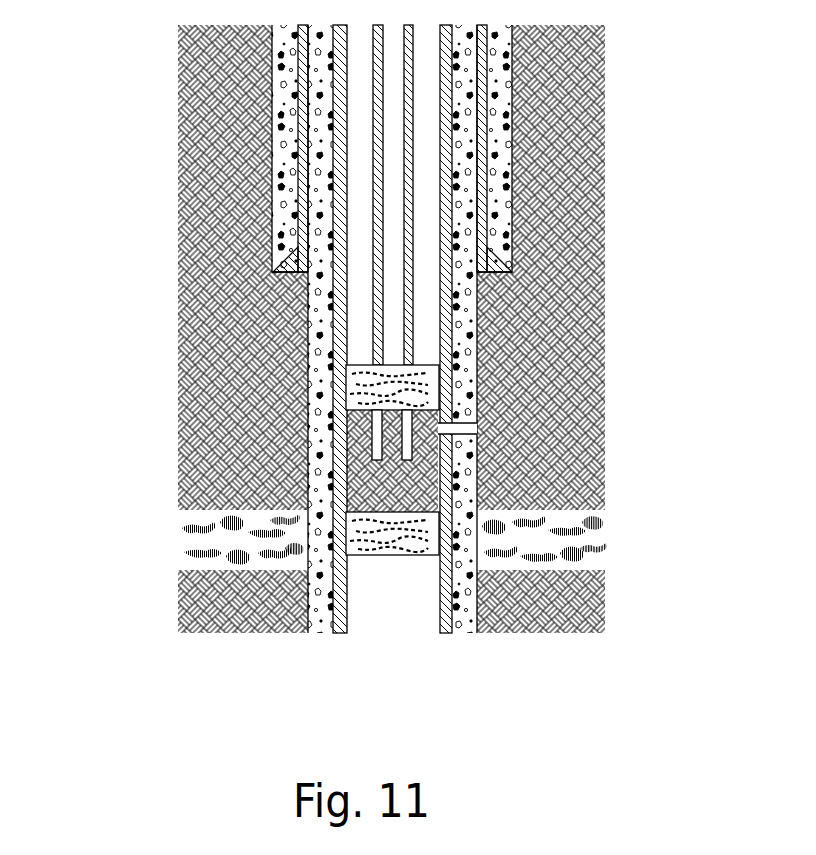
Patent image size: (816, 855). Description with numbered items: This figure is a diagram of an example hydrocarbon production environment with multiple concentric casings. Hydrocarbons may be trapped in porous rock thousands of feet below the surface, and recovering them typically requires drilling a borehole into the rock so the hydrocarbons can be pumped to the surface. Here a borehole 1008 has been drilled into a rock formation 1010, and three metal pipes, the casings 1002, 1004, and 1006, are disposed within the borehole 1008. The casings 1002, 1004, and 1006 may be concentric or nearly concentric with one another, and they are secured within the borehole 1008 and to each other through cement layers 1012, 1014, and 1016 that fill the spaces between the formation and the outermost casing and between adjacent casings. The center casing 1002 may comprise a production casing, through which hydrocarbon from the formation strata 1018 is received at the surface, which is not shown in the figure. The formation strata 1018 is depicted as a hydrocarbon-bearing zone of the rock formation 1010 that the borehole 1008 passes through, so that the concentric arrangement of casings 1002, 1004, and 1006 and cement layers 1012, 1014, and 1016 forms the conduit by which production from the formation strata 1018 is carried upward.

The casing 1002 is at (378, 360).
The casing 1004 is at (338, 235).
The casing 1006 is at (308, 77).
The borehole 1008 is at (507, 223).
The rock formation 1010 is at (570, 92).
The cement layer 1012 is at (355, 302).
The cement layer 1014 is at (320, 150).
The cement layer 1016 is at (283, 43).
The formation strata 1018 is at (570, 467).